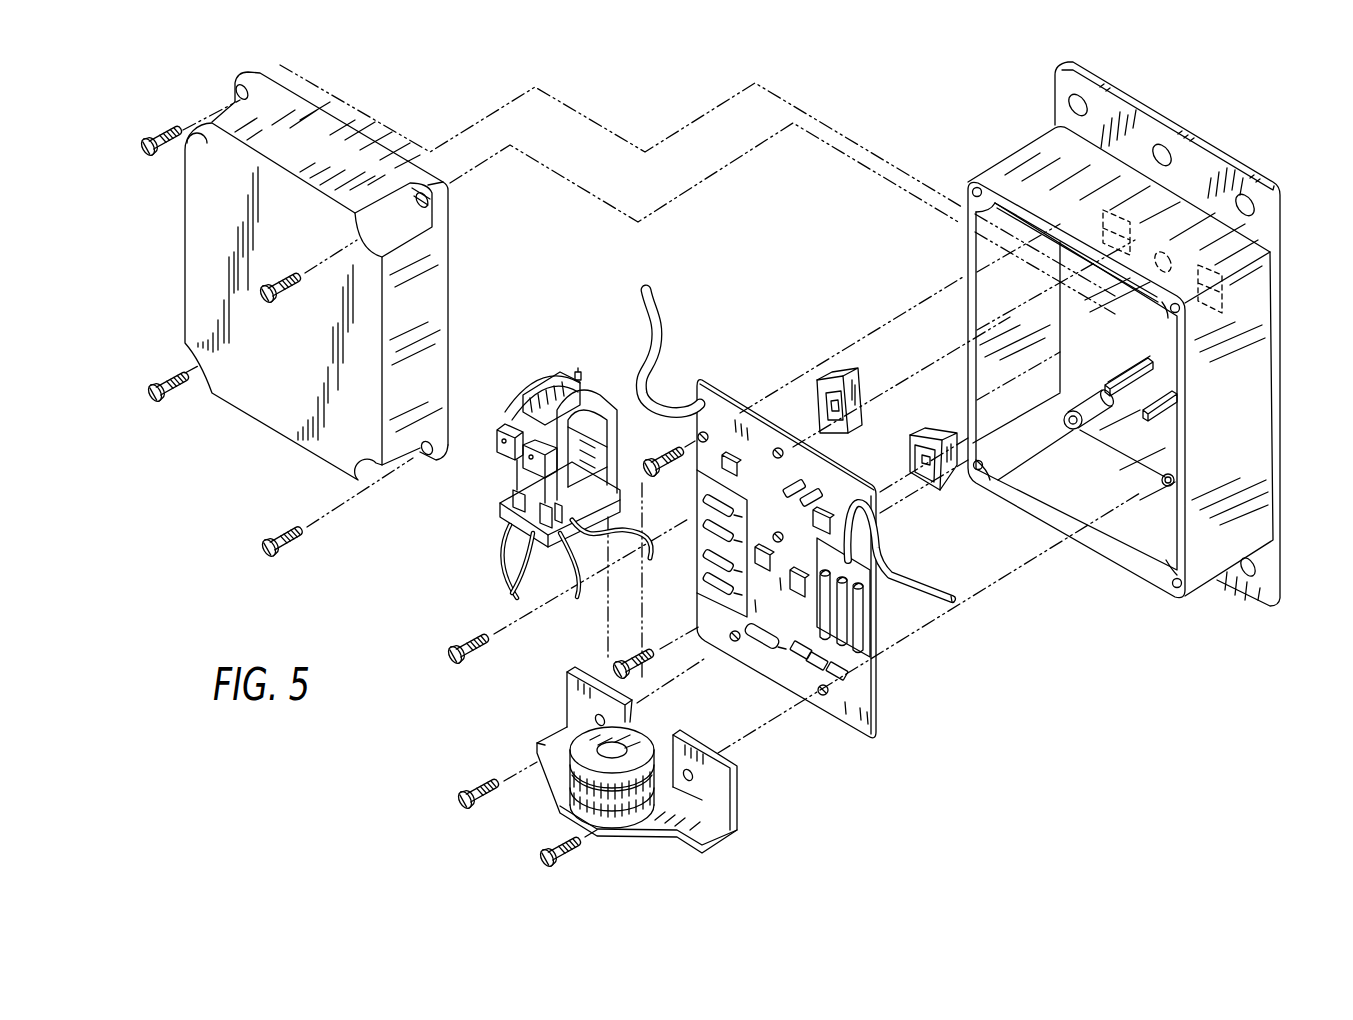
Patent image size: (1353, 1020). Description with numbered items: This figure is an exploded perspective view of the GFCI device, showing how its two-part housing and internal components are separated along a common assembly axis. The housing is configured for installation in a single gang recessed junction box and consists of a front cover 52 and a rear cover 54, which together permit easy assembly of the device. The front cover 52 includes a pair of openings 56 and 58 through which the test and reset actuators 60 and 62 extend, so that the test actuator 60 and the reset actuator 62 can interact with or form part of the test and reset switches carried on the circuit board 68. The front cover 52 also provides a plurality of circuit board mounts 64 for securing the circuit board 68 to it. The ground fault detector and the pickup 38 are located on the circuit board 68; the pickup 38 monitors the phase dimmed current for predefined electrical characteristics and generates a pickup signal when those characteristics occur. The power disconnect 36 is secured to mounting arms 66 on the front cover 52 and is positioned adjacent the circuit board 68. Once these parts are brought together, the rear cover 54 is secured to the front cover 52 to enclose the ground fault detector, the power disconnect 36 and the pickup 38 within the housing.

The power disconnect 36 is at (578, 366).
The pickup 38 is at (543, 730).
The front cover 52 is at (997, 163).
The rear cover 54 is at (440, 296).
The opening 56 is at (1100, 220).
The opening 58 is at (1222, 308).
The test actuator 60 is at (832, 378).
The reset actuator 62 is at (940, 430).
The circuit board mount 64 is at (1164, 480).
The mounting arm 66 is at (1120, 365).
The circuit board 68 is at (877, 686).